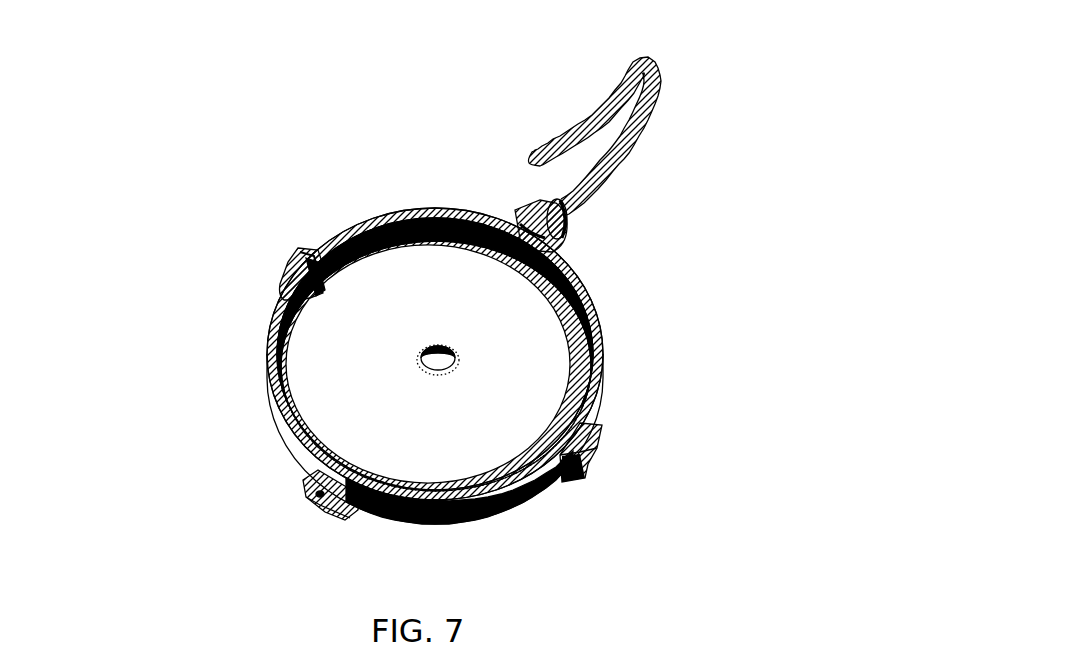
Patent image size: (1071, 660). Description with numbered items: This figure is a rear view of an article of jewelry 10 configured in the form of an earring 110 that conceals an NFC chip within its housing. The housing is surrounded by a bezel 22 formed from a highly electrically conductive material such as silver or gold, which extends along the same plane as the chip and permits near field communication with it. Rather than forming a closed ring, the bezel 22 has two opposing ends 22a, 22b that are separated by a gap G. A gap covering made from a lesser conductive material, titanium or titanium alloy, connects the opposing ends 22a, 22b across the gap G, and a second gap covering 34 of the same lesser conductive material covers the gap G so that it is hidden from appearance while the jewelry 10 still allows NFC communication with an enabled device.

The article of jewelry 10 is at (449, 274).
The bezel 22 is at (421, 326).
The opposing end of bezel 22a is at (256, 252).
The opposing end of bezel 22b is at (272, 303).
The second gap covering 34 is at (292, 270).
The gap G is at (323, 303).
The earring 110 is at (753, 53).